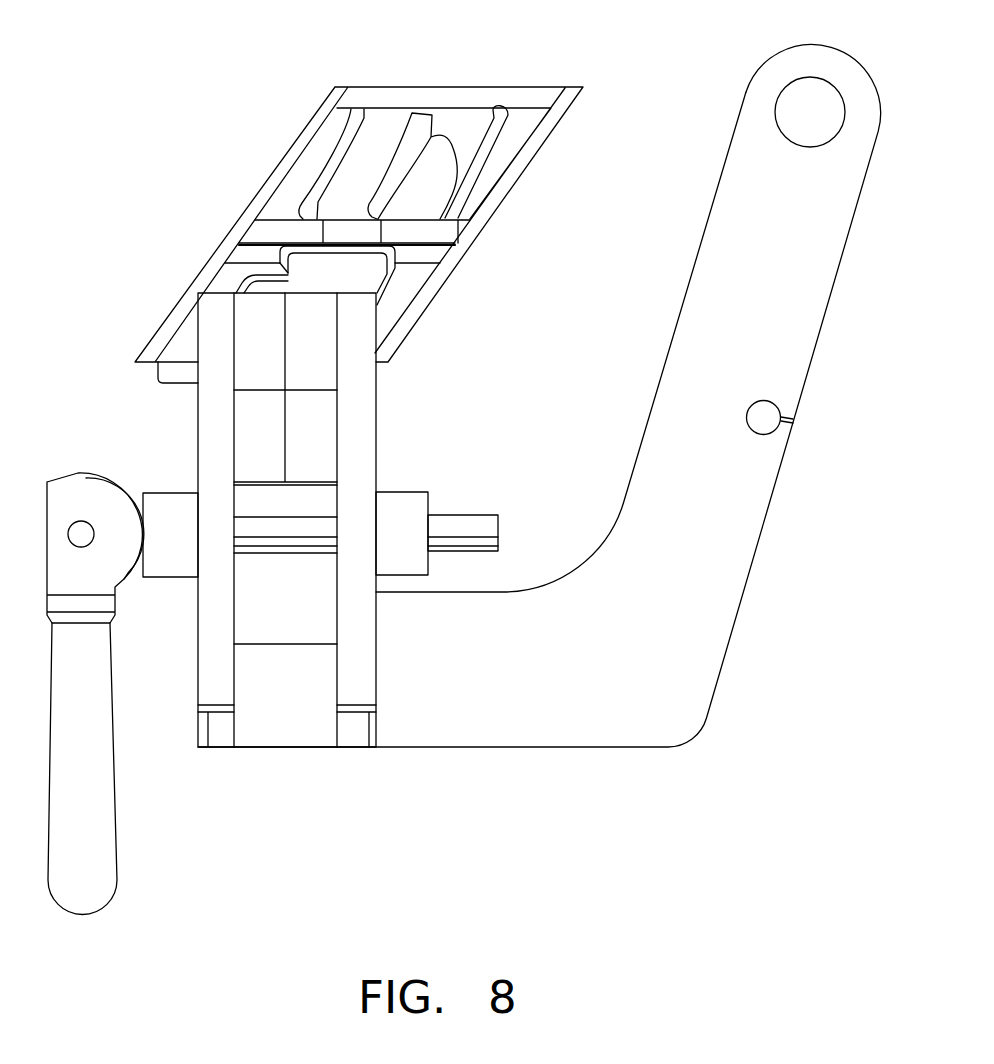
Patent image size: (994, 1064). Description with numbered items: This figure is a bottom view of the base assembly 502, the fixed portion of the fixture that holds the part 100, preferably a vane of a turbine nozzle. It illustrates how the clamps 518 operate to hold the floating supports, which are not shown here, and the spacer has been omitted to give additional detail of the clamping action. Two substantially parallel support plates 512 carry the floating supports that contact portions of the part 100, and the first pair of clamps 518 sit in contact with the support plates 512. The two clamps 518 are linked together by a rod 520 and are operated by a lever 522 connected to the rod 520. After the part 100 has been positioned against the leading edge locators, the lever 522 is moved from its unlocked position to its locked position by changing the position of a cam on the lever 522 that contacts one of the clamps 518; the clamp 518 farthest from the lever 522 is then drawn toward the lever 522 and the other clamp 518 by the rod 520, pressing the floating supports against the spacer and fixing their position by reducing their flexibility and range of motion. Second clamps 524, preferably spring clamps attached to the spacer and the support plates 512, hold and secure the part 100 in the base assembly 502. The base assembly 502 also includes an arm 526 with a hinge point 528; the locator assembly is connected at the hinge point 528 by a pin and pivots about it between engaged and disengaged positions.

The part 100 is at (458, 86).
The base assembly 502 is at (533, 723).
The support plates 512 is at (357, 733).
The clamps 518 is at (172, 492).
The rod 520 is at (464, 514).
The lever 522 is at (118, 801).
The second clamps 524 is at (312, 437).
The arm 526 is at (758, 370).
The hinge point 528 is at (810, 60).